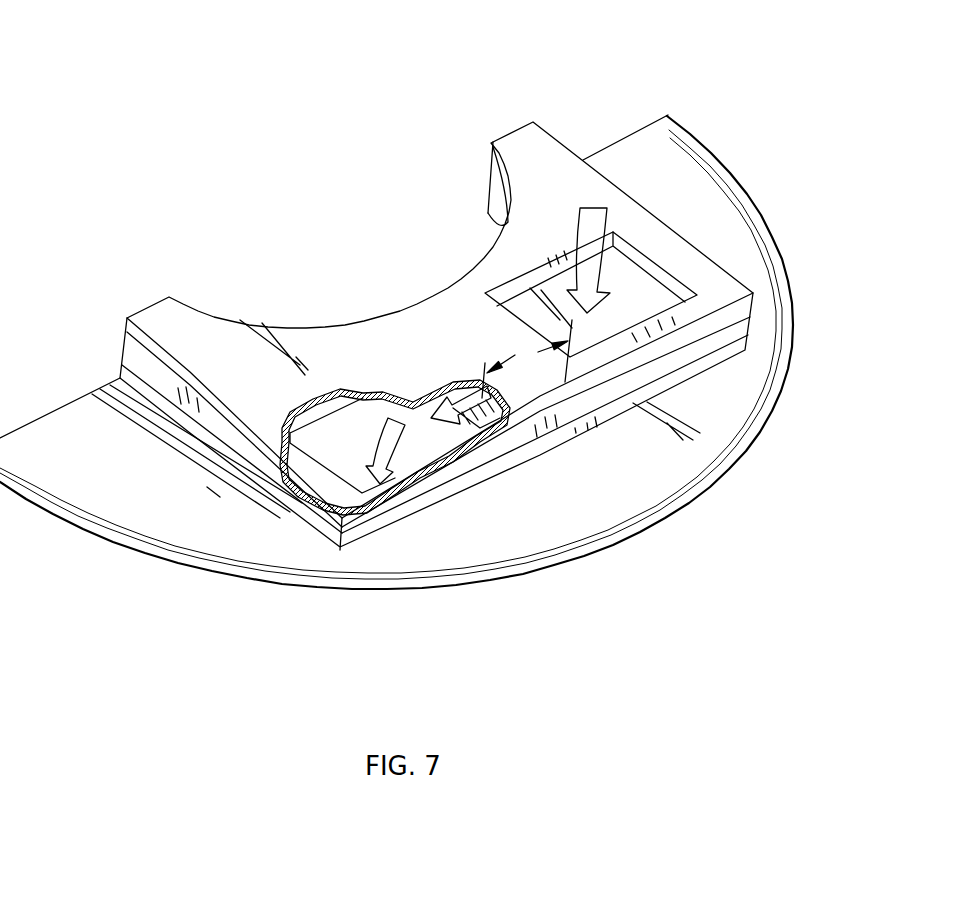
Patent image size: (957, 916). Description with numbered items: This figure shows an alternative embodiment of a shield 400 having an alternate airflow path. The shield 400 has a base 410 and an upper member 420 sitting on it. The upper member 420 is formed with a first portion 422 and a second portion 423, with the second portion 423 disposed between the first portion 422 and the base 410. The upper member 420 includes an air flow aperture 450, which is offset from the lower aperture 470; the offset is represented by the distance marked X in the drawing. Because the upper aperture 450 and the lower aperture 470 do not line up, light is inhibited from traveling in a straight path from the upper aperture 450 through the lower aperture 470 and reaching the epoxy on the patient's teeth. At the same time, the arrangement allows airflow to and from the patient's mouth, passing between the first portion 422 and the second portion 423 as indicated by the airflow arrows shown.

The shield 400 is at (199, 104).
The base 410 is at (171, 516).
The upper member 420 is at (479, 367).
The first portion 422 is at (318, 343).
The second portion 423 is at (637, 300).
The air flow aperture 450 is at (634, 280).
The lower aperture 470 is at (338, 447).